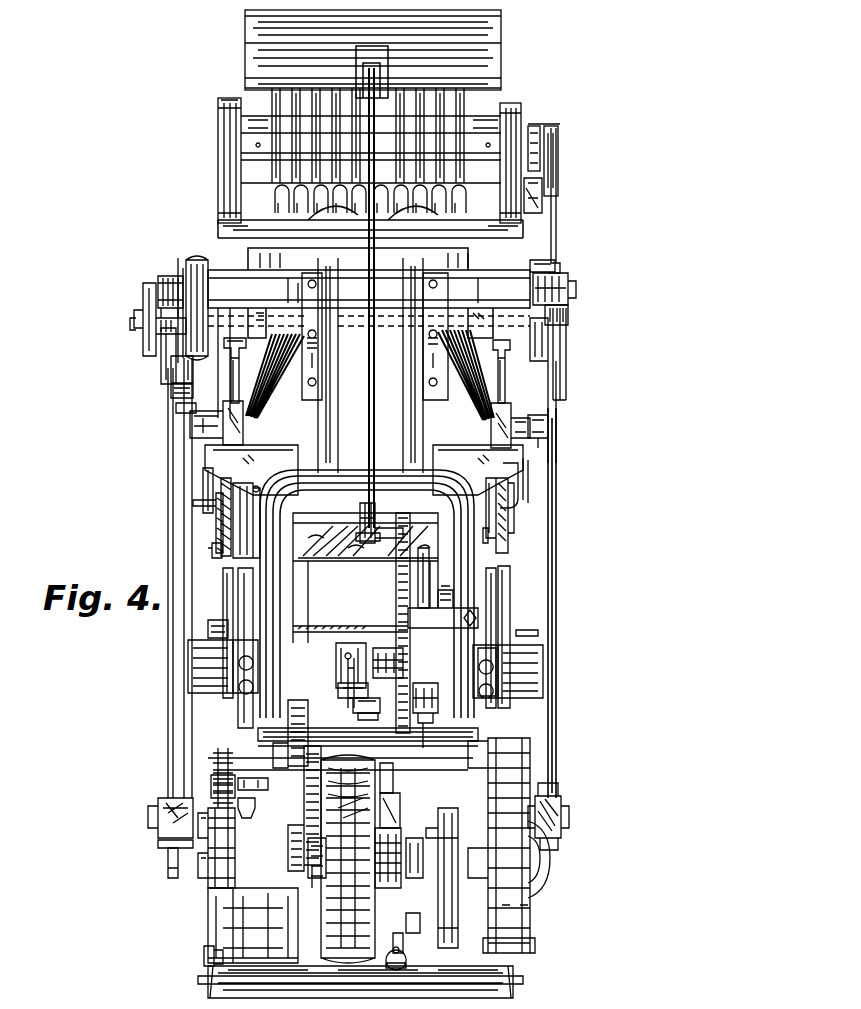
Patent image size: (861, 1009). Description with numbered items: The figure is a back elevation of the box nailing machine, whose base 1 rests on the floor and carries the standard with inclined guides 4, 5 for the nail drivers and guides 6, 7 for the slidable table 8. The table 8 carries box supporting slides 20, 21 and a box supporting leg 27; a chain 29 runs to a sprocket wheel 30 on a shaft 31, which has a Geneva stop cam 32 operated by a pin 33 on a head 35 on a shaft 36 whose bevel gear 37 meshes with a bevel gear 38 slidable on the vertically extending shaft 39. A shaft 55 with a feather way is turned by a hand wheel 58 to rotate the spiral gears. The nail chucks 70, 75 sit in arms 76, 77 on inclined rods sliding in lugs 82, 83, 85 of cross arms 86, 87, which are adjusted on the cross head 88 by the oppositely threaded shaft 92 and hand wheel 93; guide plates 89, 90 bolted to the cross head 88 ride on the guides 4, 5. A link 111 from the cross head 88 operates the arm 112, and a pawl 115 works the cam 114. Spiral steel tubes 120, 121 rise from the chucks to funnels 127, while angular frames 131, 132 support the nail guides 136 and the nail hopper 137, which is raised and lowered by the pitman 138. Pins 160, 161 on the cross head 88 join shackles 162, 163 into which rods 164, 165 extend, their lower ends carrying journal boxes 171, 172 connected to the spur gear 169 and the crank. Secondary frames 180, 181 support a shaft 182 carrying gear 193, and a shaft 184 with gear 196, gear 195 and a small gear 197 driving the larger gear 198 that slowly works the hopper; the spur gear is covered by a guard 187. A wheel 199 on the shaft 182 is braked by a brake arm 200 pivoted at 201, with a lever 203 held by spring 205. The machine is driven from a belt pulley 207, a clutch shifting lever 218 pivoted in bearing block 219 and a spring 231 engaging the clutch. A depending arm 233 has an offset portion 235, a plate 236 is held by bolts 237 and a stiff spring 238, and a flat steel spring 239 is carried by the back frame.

The base 1 is at (197, 980).
The guide 4 is at (307, 429).
The guide 5 is at (397, 429).
The guide 6 is at (233, 580).
The guide 7 is at (477, 581).
The table 8 is at (180, 660).
The box supporting slide 20 is at (183, 595).
The box supporting slide 21 is at (299, 621).
The box supporting leg 27 is at (215, 575).
The chain 29 is at (495, 593).
The sprocket wheel 30 is at (339, 663).
The shaft 31 is at (329, 677).
The Geneva stop cam 32 is at (342, 692).
The pin 33 is at (332, 637).
The head 35 is at (349, 645).
The shaft 36 is at (393, 651).
The bevel gear 37 is at (443, 607).
The bevel gear 38 is at (501, 672).
The vertically extending shaft 39 is at (410, 575).
The shaft 55 is at (383, 820).
The hand wheel 58 is at (160, 841).
The nail chuck 70 is at (237, 419).
The nail chuck 75 is at (483, 423).
The arm 76 is at (541, 421).
The arm 77 is at (175, 415).
The lug 82 is at (543, 256).
The lug 83 is at (542, 340).
The lug 85 is at (185, 252).
The cross arm 86 is at (207, 338).
The cross arm 87 is at (505, 352).
The cross head 88 is at (369, 333).
The guide plate 89 is at (296, 375).
The guide plate 90 is at (430, 382).
The shaft 92 is at (347, 313).
The hand wheel 93 is at (137, 345).
The link 111 is at (548, 192).
The arm 112 is at (546, 116).
The cam 114 is at (530, 197).
The pawl 115 is at (526, 125).
The spiral steel tube 120 is at (260, 397).
The spiral steel tube 121 is at (457, 410).
The funnel 127 is at (270, 183).
The angular frame 131 is at (500, 105).
The angular frame 132 is at (210, 128).
The nail guide 136 is at (450, 162).
The nail hopper 137 is at (493, 45).
The pitman 138 is at (361, 405).
The pin 160 is at (568, 281).
The pin 161 is at (152, 275).
The shackle 162 is at (163, 357).
The shackle 163 is at (560, 303).
The rod 164 is at (549, 540).
The rod 165 is at (167, 528).
The spur gear 169 is at (536, 904).
The journal box 171 is at (553, 795).
The journal box 172 is at (150, 797).
The secondary frame 180 is at (427, 685).
The secondary frame 181 is at (270, 745).
The shaft 182 is at (432, 878).
The shaft 184 is at (373, 794).
The guard 187 is at (538, 860).
The gear 193 is at (302, 875).
The gear 195 is at (210, 760).
The gear 196 is at (259, 695).
The gear 197 is at (398, 770).
The gear 198 is at (388, 565).
The wheel 199 is at (207, 835).
The brake arm 200 is at (205, 907).
The pivot 201 is at (196, 940).
The lever 203 is at (250, 802).
The spring 205 is at (205, 771).
The belt pulley 207 is at (317, 922).
The clutch shifting lever 218 is at (393, 927).
The bearing block 219 is at (382, 950).
The spring 231 is at (418, 885).
The depending arm 233 is at (535, 459).
The offset portion 235 is at (500, 513).
The plate 236 is at (204, 540).
The bolt 237 is at (190, 490).
The spring 238 is at (212, 497).
The flat steel spring 239 is at (195, 461).